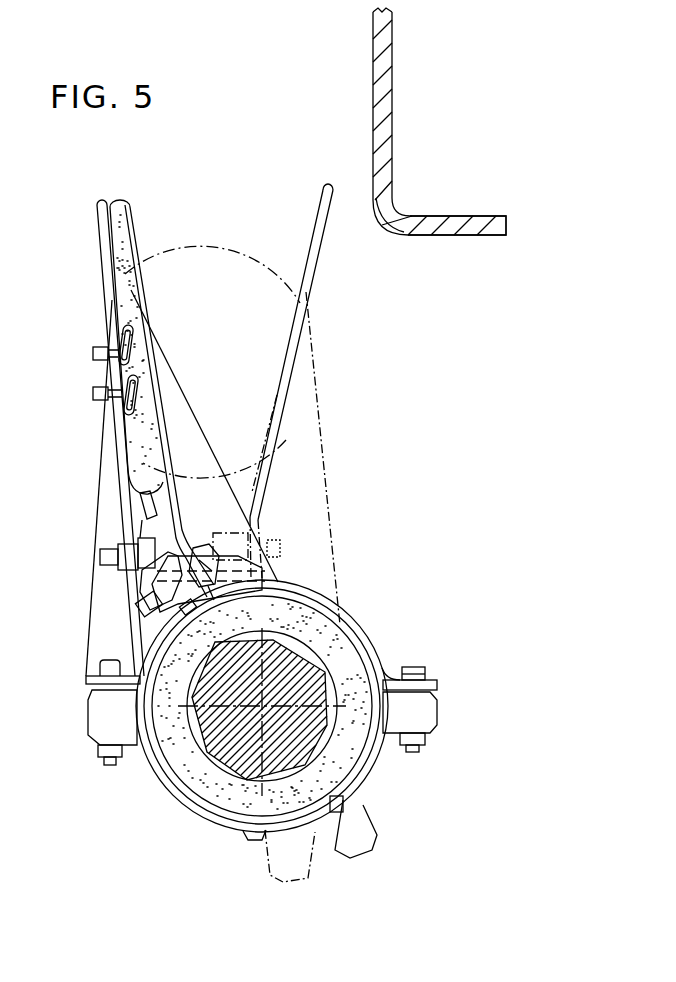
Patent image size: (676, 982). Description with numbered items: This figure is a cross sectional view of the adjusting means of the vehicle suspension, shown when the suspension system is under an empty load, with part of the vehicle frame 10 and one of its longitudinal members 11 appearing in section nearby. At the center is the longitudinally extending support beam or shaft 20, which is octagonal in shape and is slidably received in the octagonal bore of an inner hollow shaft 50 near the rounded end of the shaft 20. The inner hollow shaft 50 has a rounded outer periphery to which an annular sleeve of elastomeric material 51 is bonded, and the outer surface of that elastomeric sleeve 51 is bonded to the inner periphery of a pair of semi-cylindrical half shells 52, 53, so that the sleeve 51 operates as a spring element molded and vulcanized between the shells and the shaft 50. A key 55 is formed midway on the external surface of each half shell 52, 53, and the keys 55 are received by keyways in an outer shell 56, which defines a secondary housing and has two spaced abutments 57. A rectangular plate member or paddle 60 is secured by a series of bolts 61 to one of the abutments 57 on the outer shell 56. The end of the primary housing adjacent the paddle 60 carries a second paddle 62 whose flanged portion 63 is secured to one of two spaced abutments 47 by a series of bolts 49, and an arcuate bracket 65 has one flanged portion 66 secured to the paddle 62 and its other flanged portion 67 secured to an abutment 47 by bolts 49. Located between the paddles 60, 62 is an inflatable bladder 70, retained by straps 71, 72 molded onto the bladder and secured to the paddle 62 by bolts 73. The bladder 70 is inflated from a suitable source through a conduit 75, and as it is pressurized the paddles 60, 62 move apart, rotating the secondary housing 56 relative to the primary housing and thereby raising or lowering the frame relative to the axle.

The vehicle frame 10 is at (450, 262).
The longitudinal member 11 is at (482, 228).
The support beam or shaft 20 is at (310, 735).
The abutment 47 is at (97, 712).
The bolt 49 is at (103, 552).
The inner hollow shaft 50 is at (235, 777).
The elastomeric sleeve 51 is at (207, 792).
The semi-cylindrical half shell 52 is at (155, 750).
The semi-cylindrical half shell 53 is at (248, 822).
The key 55 is at (180, 613).
The outer shell 56 is at (178, 802).
The abutment 57 is at (160, 590).
The paddle 60 is at (118, 232).
The bolt 61 is at (200, 556).
The paddle 62 is at (103, 263).
The flanged portion 63 is at (90, 680).
The arcuate bracket 65 is at (342, 610).
The flanged portion 66 is at (133, 537).
The flanged portion 67 is at (433, 685).
The inflatable bladder 70 is at (225, 247).
The strap 71 is at (125, 342).
The strap 72 is at (127, 403).
The bolt 73 is at (103, 393).
The conduit 75 is at (147, 505).